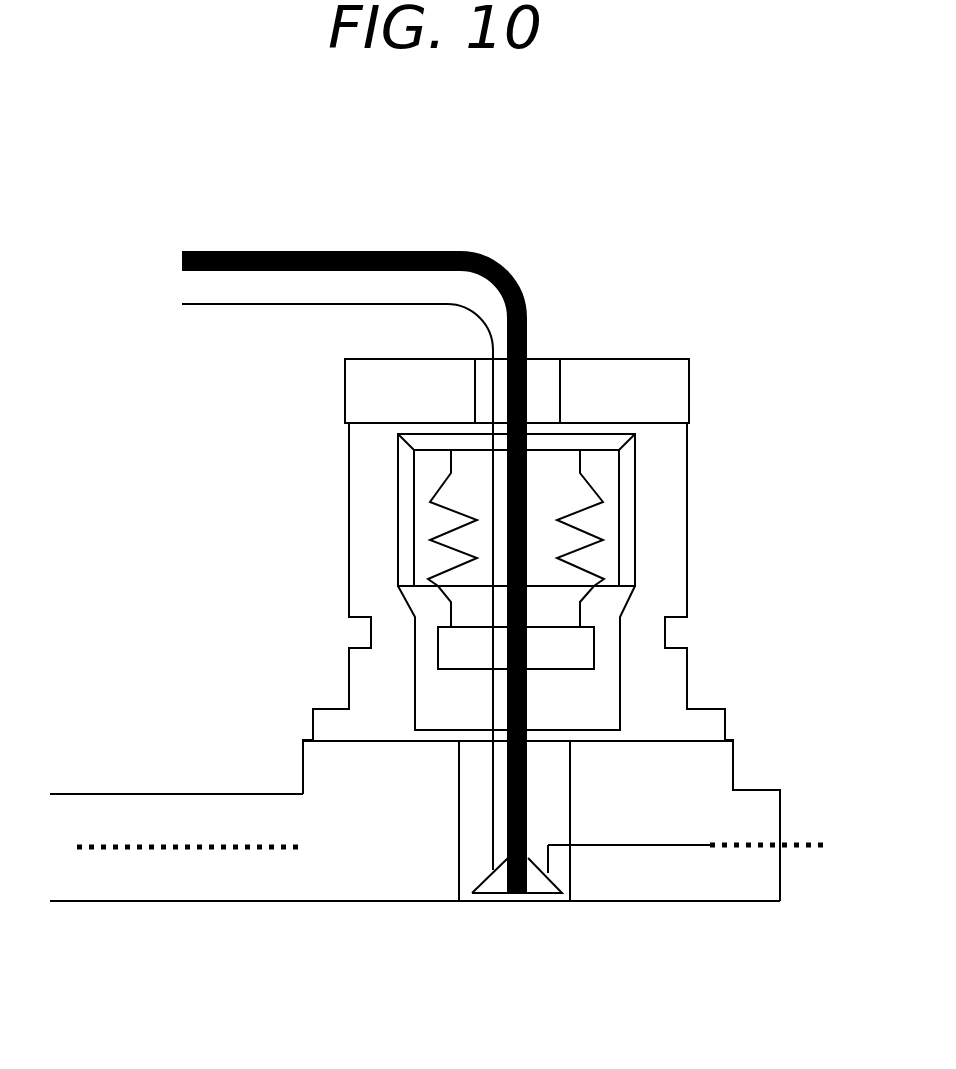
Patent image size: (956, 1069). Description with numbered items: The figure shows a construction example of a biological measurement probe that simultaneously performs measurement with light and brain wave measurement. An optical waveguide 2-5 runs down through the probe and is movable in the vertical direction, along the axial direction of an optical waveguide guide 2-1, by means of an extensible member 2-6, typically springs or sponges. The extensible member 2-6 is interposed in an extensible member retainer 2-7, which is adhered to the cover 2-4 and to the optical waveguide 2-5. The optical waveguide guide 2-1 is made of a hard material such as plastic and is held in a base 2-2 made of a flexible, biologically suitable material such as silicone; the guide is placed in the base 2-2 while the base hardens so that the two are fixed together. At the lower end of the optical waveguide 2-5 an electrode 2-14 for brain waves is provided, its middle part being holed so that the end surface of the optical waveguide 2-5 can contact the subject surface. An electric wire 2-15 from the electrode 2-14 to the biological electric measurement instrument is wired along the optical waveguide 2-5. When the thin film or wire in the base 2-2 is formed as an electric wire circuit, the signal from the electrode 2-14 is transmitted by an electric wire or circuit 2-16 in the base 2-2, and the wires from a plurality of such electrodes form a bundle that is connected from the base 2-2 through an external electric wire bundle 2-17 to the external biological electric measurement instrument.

The optical waveguide guide 2-1 is at (668, 473).
The base 2-2 is at (105, 803).
The cover 2-4 is at (660, 370).
The optical waveguide 2-5 is at (337, 250).
The extensible member 2-6 is at (448, 530).
The extensible member retainer 2-7 is at (447, 652).
The electrode 2-14 is at (495, 887).
The electric wire 2-15 is at (213, 306).
The electric wire or circuit 2-16 is at (178, 850).
The external electric wire bundle 2-17 is at (797, 845).